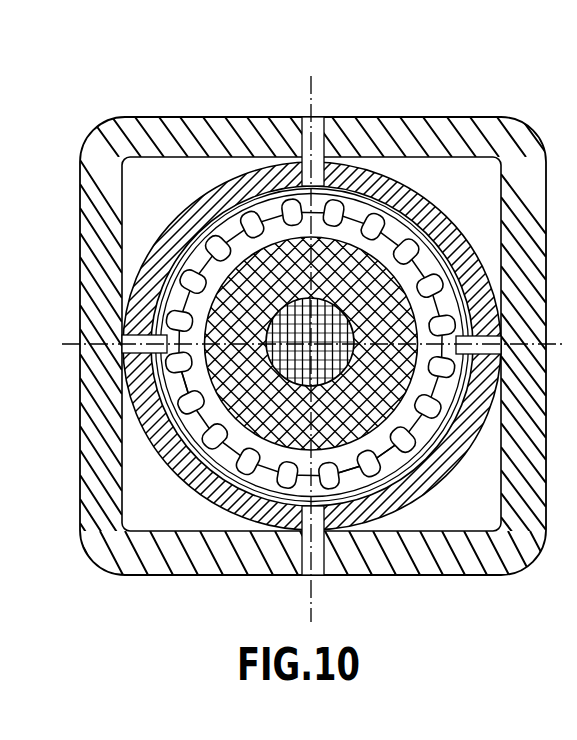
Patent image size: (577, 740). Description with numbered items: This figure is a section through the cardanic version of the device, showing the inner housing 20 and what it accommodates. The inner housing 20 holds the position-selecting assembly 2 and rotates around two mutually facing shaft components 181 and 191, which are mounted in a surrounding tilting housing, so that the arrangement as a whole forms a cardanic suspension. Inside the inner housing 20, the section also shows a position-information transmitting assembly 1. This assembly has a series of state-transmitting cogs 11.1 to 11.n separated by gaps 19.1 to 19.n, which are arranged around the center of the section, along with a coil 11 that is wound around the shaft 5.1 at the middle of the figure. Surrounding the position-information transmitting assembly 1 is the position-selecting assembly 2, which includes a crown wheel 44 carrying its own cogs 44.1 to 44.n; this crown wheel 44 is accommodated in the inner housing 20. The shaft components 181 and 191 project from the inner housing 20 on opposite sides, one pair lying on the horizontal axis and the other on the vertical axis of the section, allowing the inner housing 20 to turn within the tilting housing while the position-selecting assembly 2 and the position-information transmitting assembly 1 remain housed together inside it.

The position-information transmitting assembly 1 is at (301, 414).
The position-selecting assembly 2 is at (190, 228).
The shaft 5.1 is at (196, 236).
The coil 11 is at (177, 374).
The state-transmitting cog 11.1 is at (390, 448).
The state-transmitting cog 11.n is at (353, 473).
The gap 19.1 is at (433, 424).
The gap 19.n is at (373, 463).
The inner housing 20 is at (82, 533).
The crown wheel 44 is at (357, 210).
The cog of crown wheel 44.1 is at (450, 250).
The cog of crown wheel 44.n is at (395, 223).
The shaft component 181 is at (123, 335).
The shaft component 191 is at (302, 118).